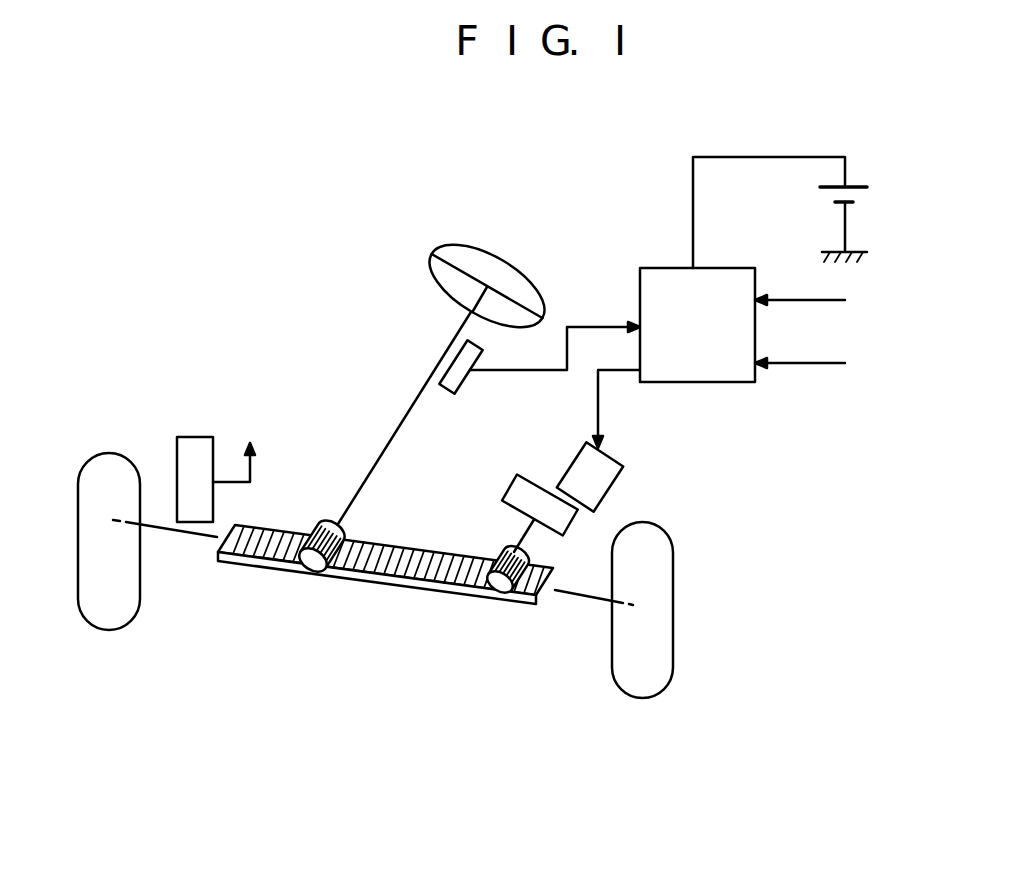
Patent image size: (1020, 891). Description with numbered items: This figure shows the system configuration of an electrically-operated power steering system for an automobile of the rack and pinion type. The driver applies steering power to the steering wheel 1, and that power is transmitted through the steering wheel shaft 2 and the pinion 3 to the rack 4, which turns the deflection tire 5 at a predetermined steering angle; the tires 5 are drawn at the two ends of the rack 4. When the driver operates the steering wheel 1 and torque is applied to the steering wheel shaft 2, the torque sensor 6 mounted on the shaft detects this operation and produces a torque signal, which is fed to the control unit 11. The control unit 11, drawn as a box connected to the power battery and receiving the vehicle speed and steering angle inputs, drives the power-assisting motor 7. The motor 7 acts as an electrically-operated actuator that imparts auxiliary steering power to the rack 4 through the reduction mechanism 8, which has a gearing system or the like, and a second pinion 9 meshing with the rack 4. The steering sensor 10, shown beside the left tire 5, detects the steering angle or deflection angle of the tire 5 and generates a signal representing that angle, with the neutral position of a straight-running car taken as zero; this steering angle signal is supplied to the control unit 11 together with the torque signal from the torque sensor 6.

The steering wheel 1 is at (474, 245).
The steering wheel shaft 2 is at (392, 440).
The pinion 3 is at (322, 527).
The rack 4 is at (380, 584).
The deflection tire (wheel) 5 is at (113, 453).
The torque sensor 6 is at (447, 390).
The power-assisting motor 7 is at (601, 452).
The reduction mechanism 8 is at (520, 478).
The pinion 9 is at (503, 588).
The steering sensor 10 is at (200, 437).
The control unit 11 is at (742, 382).